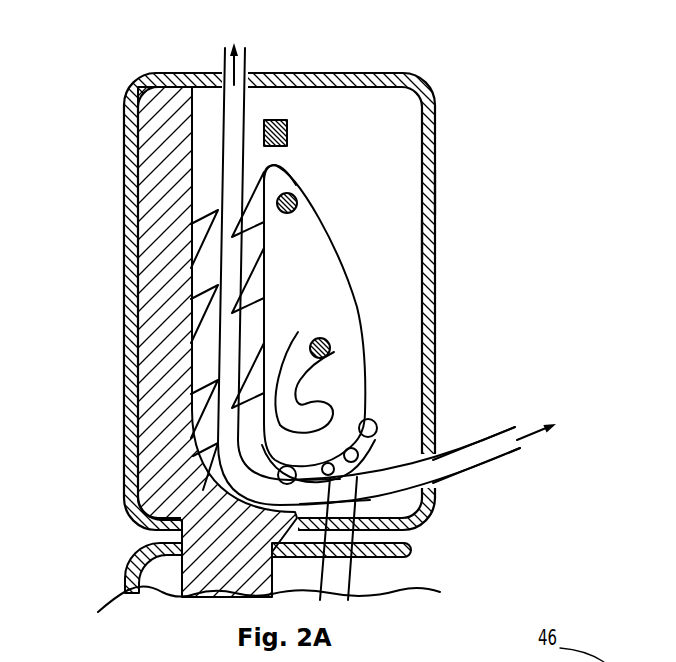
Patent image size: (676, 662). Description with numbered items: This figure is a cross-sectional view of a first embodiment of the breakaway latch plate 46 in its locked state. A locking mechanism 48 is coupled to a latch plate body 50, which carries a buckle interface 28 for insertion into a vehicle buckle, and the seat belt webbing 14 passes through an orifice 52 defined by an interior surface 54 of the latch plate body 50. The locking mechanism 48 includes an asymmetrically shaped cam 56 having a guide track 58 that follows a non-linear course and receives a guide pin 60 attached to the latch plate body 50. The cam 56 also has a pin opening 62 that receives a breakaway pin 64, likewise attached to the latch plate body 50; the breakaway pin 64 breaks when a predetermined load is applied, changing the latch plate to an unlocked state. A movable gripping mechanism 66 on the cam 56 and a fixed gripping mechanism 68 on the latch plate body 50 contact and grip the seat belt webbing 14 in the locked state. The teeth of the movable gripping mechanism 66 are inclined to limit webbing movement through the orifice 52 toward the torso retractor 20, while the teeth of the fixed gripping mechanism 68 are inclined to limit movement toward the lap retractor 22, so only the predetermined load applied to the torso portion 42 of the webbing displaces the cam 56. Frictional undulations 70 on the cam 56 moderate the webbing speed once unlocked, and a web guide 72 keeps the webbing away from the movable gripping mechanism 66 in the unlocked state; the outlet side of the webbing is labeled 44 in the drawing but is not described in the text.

The seat belt webbing 14 is at (380, 487).
The torso retractor 20 is at (257, 43).
The lap retractor 22 is at (602, 431).
The buckle interface 28 is at (170, 600).
The torso portion 42 is at (247, 62).
The outlet tube 44 is at (493, 452).
The breakaway latch plate 46 is at (497, 150).
The locking mechanism 48 is at (430, 193).
The latch plate body 50 is at (413, 238).
The orifice 52 is at (212, 100).
The interior surface 54 is at (192, 190).
The cam 56 is at (317, 306).
The guide track 58 is at (358, 307).
The guide pin 60 is at (330, 348).
The pin opening 62 is at (290, 192).
The breakaway pin 64 is at (298, 204).
The movable gripping mechanism 66 is at (240, 300).
The fixed gripping mechanism 68 is at (198, 397).
The frictional undulations 70 is at (348, 600).
The web guide 72 is at (290, 133).